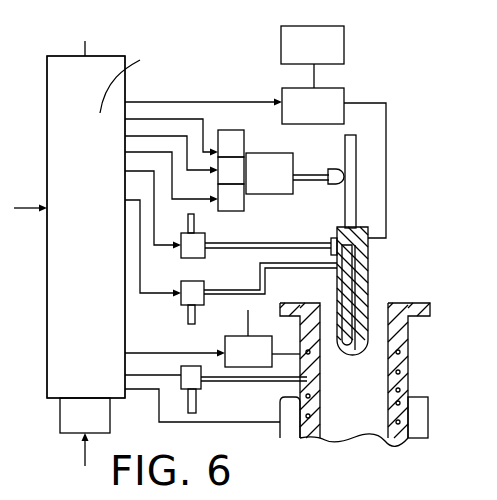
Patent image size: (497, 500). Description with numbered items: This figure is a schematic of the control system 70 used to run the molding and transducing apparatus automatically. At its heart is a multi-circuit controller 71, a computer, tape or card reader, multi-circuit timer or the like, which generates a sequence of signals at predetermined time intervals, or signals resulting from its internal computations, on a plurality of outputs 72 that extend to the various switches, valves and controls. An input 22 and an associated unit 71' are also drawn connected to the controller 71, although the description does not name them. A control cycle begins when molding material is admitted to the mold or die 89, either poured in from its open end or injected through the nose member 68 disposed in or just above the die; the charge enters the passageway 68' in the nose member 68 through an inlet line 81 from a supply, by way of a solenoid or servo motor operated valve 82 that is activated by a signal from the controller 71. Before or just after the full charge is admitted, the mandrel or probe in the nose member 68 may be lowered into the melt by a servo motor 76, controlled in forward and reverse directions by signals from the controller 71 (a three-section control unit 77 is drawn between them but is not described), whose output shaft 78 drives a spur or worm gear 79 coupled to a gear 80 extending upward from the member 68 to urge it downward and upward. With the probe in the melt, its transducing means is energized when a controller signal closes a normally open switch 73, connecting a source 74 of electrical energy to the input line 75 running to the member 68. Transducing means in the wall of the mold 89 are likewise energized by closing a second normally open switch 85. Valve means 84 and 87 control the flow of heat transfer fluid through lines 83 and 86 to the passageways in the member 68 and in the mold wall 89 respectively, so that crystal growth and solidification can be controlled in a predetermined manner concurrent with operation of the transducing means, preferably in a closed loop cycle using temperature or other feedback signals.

The input signal 22 is at (23, 156).
The control system 70 is at (40, 375).
The multi-circuit controller 71 is at (121, 233).
The input unit 71' is at (85, 432).
The outputs 72 is at (153, 101).
The normally open switch 73 is at (340, 97).
The source of electrical energy 74 is at (340, 52).
The input line 75 is at (382, 170).
The servo motor 76 is at (283, 185).
The up/stop/down control unit 77 is at (232, 130).
The output shaft 78 is at (310, 181).
The spur or worm gear 79 is at (335, 170).
The gear 80 is at (352, 193).
The inlet line 81 is at (256, 247).
The valve 82 is at (198, 244).
The line 83 is at (244, 292).
The valve means 84 is at (200, 295).
The second normally open switch 85 is at (262, 366).
The line 86 is at (278, 381).
The valve means 87 is at (196, 384).
The nose member 68 is at (367, 291).
The passageway 68' is at (375, 297).
The mold or die 89 is at (402, 386).